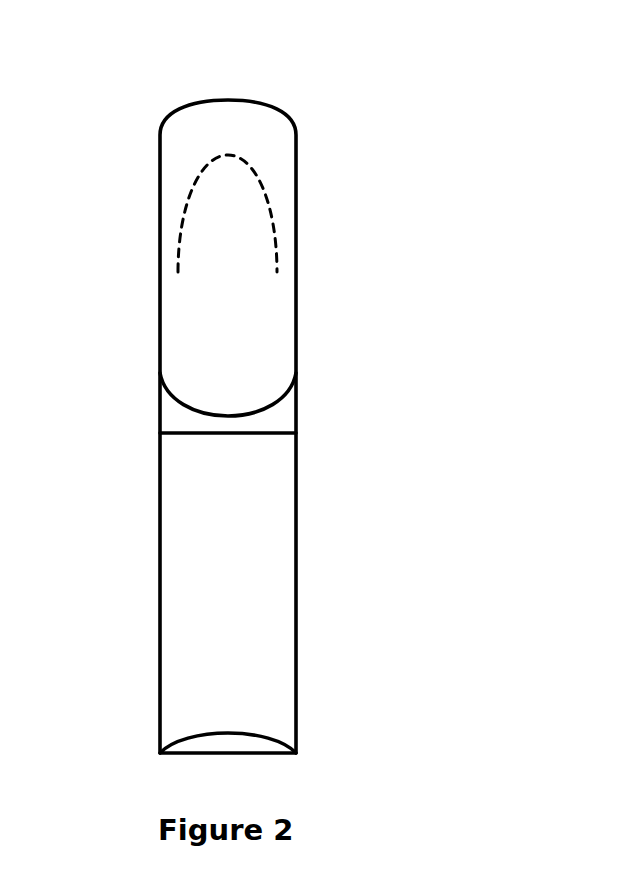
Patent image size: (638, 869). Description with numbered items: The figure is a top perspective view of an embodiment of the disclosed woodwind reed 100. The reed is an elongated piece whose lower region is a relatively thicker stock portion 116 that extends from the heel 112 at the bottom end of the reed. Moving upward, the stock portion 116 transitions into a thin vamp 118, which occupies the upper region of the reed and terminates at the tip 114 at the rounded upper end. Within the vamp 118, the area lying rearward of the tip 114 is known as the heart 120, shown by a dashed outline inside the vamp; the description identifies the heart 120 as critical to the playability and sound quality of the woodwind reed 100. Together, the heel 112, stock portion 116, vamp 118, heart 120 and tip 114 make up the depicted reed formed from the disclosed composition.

The woodwind reed 100 is at (372, 262).
The heel 112 is at (228, 743).
The tip 114 is at (228, 100).
The stock portion 116 is at (300, 437).
The vamp 118 is at (145, 118).
The heart 120 is at (242, 270).